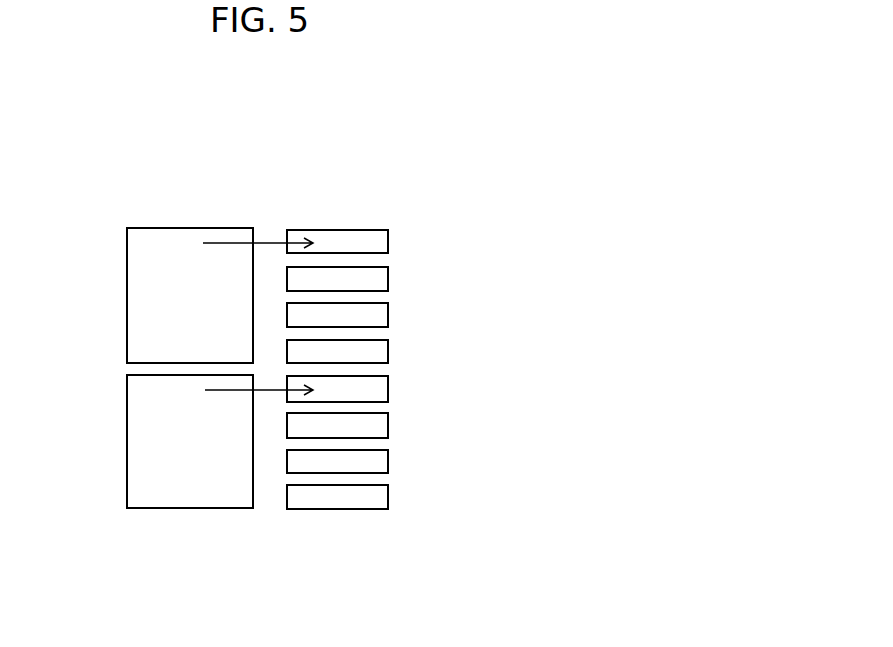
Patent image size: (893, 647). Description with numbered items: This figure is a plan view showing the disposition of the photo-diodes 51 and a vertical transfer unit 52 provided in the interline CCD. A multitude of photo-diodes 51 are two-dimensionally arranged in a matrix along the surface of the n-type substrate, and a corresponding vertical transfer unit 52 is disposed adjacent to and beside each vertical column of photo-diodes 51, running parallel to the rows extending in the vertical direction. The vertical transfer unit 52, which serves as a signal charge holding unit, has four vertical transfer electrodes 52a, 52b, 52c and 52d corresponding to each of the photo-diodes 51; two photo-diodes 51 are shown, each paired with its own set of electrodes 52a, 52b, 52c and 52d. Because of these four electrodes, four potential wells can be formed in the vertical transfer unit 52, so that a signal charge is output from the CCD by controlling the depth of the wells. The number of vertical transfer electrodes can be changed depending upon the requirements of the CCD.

The photo-diode 51 is at (162, 328).
The vertical transfer unit 52 is at (521, 328).
The vertical transfer electrode 52a is at (388, 241).
The vertical transfer electrode 52b is at (388, 278).
The vertical transfer electrode 52c is at (388, 314).
The vertical transfer electrode 52d is at (388, 350).